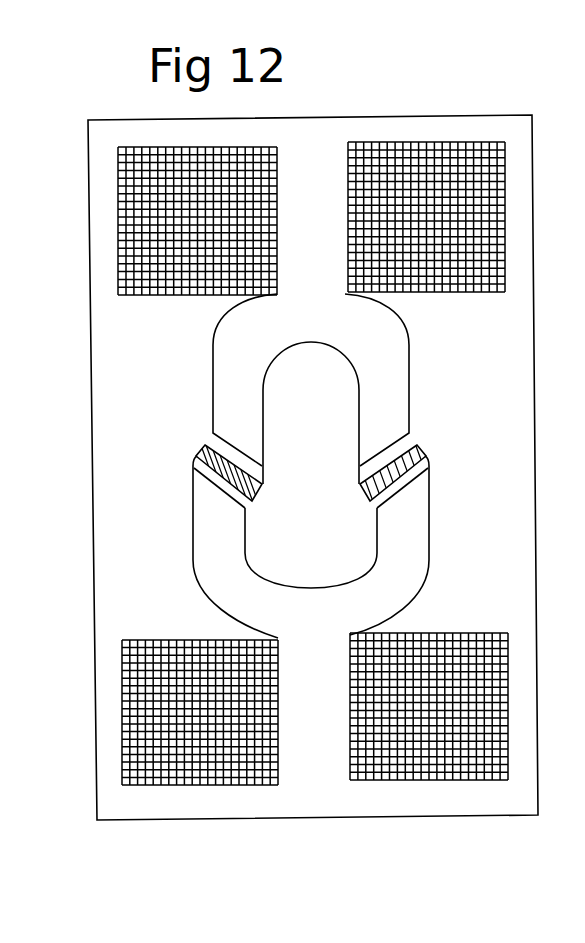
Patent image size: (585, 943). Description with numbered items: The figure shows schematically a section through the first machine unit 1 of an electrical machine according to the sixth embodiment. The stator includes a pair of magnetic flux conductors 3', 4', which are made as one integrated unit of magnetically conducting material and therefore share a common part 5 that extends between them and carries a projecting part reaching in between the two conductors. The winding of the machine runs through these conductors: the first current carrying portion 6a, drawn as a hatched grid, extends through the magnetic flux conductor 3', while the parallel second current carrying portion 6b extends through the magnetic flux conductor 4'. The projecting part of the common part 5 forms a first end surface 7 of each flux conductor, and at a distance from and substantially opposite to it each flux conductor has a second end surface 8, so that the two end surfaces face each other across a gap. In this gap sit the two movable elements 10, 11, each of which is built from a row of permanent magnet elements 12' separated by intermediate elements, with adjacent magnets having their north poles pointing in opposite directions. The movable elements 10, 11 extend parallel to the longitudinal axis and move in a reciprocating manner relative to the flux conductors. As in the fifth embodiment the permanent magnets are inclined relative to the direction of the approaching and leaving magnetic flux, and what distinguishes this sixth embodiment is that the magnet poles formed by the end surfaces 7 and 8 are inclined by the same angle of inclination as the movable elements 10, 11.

The sensor element 1 is at (528, 88).
The first terminal region 3' is at (174, 458).
The second terminal region 4' is at (447, 459).
The conductor loop structure 5 is at (322, 142).
The first grid electrode area 6a is at (127, 213).
The second grid electrode area 6b is at (487, 187).
The lower conductor edge 7 is at (247, 508).
The upper conductor edge 8 is at (263, 462).
The first hatched bridge 10 is at (205, 445).
The second hatched bridge 11 is at (418, 445).
The first gap 12' is at (189, 492).